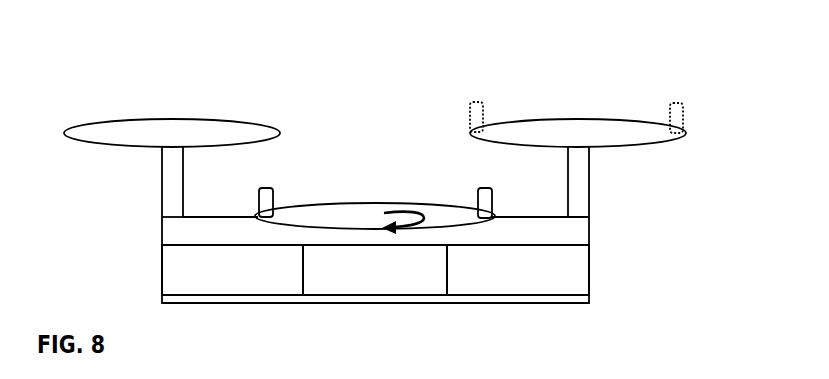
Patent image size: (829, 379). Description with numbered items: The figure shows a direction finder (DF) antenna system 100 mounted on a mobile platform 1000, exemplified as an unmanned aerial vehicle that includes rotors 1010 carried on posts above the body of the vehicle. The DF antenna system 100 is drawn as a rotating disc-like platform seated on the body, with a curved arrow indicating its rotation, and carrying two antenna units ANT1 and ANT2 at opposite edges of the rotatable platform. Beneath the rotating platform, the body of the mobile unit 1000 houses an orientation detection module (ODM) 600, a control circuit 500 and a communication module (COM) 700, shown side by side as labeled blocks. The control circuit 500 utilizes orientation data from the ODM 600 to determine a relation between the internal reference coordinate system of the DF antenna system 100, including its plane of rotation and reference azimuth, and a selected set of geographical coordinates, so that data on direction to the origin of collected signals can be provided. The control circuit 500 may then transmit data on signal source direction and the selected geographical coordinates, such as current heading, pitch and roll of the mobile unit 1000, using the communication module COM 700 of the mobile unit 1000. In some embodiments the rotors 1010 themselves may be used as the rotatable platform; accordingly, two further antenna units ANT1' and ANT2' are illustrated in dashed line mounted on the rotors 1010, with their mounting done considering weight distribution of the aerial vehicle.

The mobile platform 1000 is at (337, 112).
The rotors 1010 is at (160, 118).
The DF antenna system 100 is at (382, 203).
The control circuit 500 is at (375, 270).
The orientation detection module 600 is at (232, 270).
The communication module 700 is at (518, 270).
The antenna unit ANT1 is at (509, 192).
The antenna unit ANT2 is at (239, 191).
The antenna unit mounted on rotor ANT1' is at (717, 99).
The antenna unit mounted on rotor ANT2' is at (451, 104).